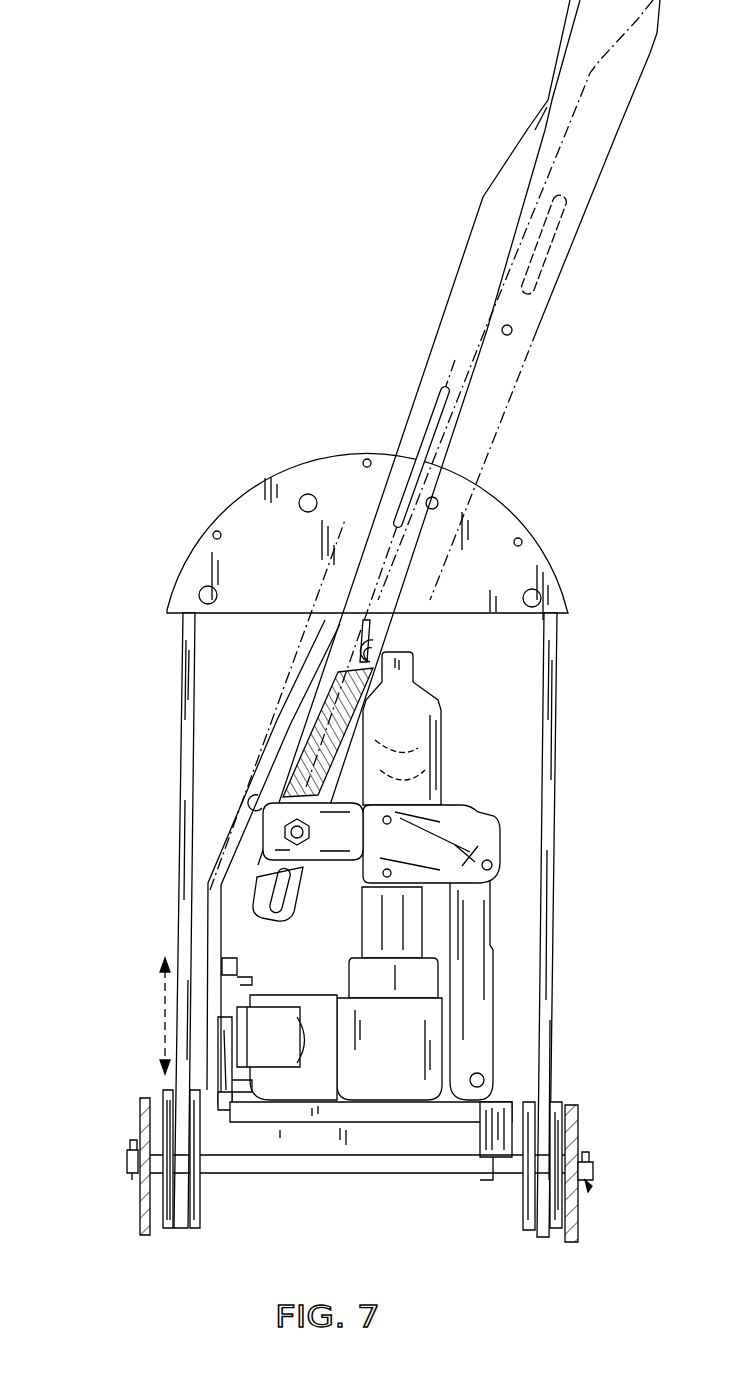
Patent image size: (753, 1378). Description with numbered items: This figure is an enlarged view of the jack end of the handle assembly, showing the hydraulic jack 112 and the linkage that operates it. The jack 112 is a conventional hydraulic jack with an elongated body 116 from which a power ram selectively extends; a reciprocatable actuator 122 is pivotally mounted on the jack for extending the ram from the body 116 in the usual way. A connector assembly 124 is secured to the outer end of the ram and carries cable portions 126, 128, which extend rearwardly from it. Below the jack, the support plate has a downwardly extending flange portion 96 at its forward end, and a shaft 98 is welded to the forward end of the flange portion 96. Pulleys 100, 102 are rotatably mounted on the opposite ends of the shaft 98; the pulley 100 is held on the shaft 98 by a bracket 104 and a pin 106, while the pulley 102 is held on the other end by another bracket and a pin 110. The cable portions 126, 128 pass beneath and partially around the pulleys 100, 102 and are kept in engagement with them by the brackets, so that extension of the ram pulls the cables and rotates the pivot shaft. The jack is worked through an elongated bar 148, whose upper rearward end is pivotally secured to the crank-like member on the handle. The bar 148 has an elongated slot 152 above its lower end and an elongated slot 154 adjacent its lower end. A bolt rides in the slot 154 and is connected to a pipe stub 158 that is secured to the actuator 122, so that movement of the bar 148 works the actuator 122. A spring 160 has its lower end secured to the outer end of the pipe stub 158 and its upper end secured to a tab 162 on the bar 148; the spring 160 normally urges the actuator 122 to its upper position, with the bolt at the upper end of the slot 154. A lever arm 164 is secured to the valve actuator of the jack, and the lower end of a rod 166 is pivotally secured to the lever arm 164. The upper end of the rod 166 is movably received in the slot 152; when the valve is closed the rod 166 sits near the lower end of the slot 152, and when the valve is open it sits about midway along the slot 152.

The flange portion 96 is at (495, 1117).
The shaft 98 is at (594, 1168).
The pulley 100 is at (160, 1120).
The pulley 102 is at (580, 1128).
The bracket 104 is at (140, 1200).
The pin 106 is at (128, 1173).
The pin 110 is at (594, 1185).
The hydraulic jack 112 is at (424, 980).
The elongated body 116 is at (410, 730).
The reciprocatable actuator 122 is at (445, 820).
The connector assembly 124 is at (487, 533).
The cable portion 126 is at (180, 690).
The cable portion 128 is at (556, 705).
The bar 148 is at (498, 225).
The slot 152 is at (428, 430).
The slot 154 is at (278, 883).
The pipe stub 158 is at (262, 838).
The spring 160 is at (320, 730).
The tab 162 is at (393, 613).
The lever arm 164 is at (230, 1108).
The rod 166 is at (265, 762).